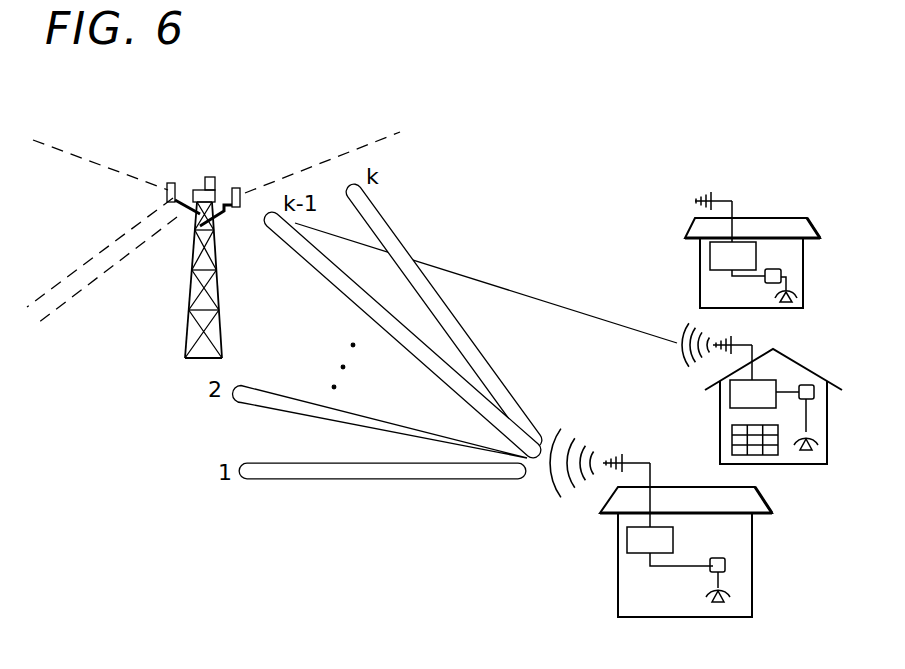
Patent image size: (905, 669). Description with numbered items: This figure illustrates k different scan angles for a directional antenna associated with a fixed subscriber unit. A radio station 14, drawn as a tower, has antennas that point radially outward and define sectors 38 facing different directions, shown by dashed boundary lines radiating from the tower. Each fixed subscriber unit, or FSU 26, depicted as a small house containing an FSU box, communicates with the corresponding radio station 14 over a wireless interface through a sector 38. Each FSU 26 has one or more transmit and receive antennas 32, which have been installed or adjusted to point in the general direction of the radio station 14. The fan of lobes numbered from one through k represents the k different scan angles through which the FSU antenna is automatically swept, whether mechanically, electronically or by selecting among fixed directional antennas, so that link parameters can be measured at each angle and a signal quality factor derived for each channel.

The radio station 14 is at (156, 303).
The fixed subscriber unit (FSU) 26 is at (710, 253).
The transmit and receive antenna 32 is at (733, 205).
The sector 38 is at (28, 170).